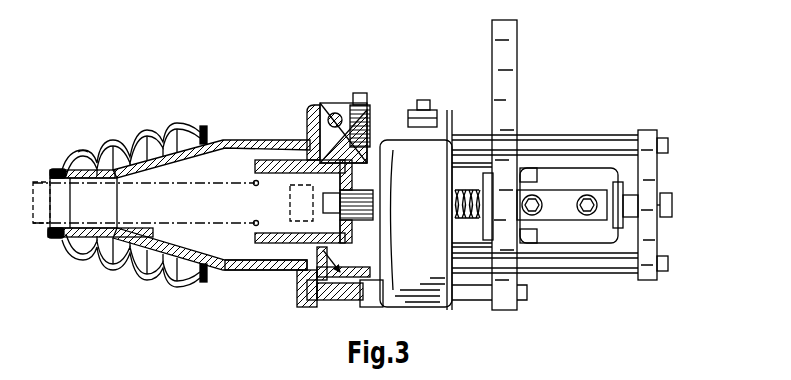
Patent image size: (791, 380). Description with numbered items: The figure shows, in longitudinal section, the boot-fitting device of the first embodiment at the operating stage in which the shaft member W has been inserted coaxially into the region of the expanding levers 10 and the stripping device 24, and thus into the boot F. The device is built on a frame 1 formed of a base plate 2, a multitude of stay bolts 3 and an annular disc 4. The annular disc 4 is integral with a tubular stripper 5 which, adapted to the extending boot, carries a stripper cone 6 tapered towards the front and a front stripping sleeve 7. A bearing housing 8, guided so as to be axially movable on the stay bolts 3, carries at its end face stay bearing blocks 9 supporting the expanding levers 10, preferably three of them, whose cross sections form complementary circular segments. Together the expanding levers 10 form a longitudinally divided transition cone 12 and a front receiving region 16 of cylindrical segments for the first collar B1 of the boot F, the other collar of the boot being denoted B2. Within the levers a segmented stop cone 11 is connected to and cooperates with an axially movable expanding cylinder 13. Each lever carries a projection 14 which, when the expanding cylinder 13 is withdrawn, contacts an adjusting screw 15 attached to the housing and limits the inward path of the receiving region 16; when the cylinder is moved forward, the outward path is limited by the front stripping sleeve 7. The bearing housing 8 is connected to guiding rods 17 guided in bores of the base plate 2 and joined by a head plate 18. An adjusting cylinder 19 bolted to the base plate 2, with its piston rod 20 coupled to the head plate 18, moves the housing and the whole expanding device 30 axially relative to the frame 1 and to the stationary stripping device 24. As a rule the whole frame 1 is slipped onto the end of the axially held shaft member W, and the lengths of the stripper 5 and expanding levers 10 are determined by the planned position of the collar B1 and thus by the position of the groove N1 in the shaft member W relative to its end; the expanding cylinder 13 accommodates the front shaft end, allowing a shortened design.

The frame 1 is at (510, 312).
The base plate 2 is at (510, 118).
The stay bolts 3 is at (470, 290).
The annular disc 4 is at (313, 298).
The tubular stripper 5 is at (282, 270).
The stripper cone 6 is at (167, 280).
The front stripping sleeve 7 is at (94, 240).
The bearing housing 8 is at (430, 288).
The stay bearing blocks 9 is at (345, 108).
The expanding levers 10 is at (242, 143).
The segmented stop cone 11 is at (277, 165).
The transition cone 12 is at (150, 135).
The expanding cylinder 13 is at (314, 108).
The projections 14 is at (365, 145).
The adjusting screws 15 is at (372, 112).
The front receiving region 16 is at (62, 236).
The guiding rods 17 is at (590, 140).
The head plate 18 is at (647, 135).
The adjusting cylinder 19 is at (585, 240).
The piston rod 20 is at (628, 218).
The stripping device 24 is at (250, 271).
The expanding device 30 is at (360, 302).
The first collar B1 is at (62, 168).
The second clamp band B2 is at (203, 128).
The boot F is at (84, 148).
The hidden shaft N1 is at (58, 230).
The shaft member W is at (192, 212).